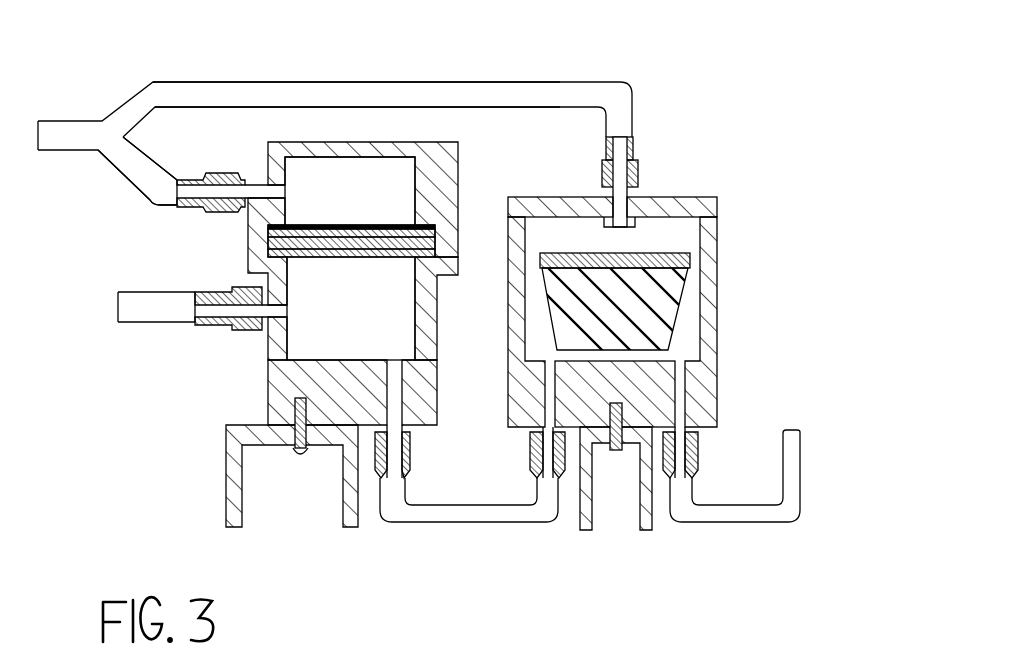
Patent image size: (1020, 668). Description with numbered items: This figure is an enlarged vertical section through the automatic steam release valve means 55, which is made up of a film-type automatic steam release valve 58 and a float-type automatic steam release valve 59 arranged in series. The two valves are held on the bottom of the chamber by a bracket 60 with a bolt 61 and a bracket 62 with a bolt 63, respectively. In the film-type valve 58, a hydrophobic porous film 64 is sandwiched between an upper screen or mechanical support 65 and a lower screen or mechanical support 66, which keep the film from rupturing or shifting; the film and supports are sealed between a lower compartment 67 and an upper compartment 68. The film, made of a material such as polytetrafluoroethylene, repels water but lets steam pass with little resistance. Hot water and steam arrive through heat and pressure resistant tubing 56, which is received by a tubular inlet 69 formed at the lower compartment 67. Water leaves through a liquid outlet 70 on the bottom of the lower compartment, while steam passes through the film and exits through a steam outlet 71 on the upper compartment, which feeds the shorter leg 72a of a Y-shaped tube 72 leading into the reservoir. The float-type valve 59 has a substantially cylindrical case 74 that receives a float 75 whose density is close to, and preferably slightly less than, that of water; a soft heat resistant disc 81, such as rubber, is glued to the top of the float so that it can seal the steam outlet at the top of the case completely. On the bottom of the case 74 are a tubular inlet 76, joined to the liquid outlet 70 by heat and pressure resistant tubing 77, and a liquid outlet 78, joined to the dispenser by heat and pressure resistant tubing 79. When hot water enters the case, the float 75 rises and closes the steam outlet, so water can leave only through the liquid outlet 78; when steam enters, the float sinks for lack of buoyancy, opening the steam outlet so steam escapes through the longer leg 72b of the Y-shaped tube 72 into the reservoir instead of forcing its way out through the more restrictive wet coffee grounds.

The automatic steam release valve means 55 is at (660, 106).
The heat and pressure resistant tubing 56 is at (148, 322).
The film-type automatic steam release valve 58 is at (396, 267).
The float-type automatic steam release valve 59 is at (650, 281).
The bracket 60 is at (228, 450).
The bolt 61 is at (300, 455).
The bracket 62 is at (580, 528).
The bolt 63 is at (614, 452).
The hydrophobic porous film 64 is at (437, 243).
The screen or mechanical support 65 is at (331, 225).
The screen or mechanical support 66 is at (331, 258).
The lower compartment 67 is at (440, 392).
The upper compartment 68 is at (457, 189).
The tubular inlet 69 is at (208, 306).
The liquid outlet 70 is at (412, 450).
The steam outlet 71 is at (212, 202).
The Y-shaped tube 72 is at (299, 139).
The shorter leg 72a is at (137, 167).
The longer leg 72b is at (258, 108).
The substantially cylindrical case 74 is at (720, 358).
The float 75 is at (680, 300).
The tubular inlet 76 is at (535, 454).
The heat and pressure resistant tubing 77 is at (503, 523).
The liquid outlet 78 is at (700, 458).
The heat and pressure resistant tubing 79 is at (758, 523).
The disc 81 is at (688, 254).